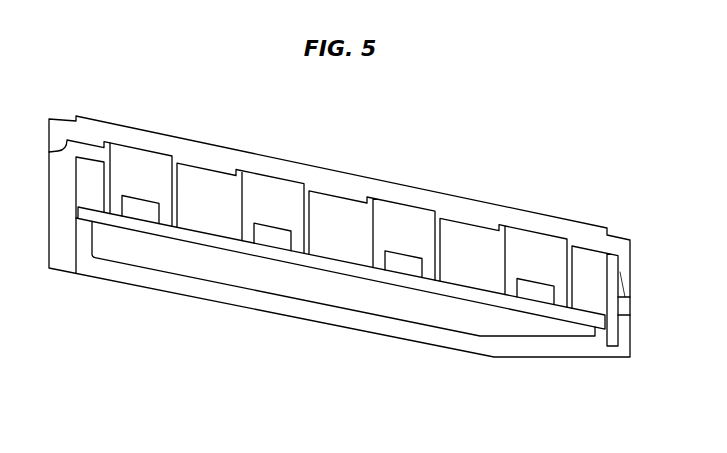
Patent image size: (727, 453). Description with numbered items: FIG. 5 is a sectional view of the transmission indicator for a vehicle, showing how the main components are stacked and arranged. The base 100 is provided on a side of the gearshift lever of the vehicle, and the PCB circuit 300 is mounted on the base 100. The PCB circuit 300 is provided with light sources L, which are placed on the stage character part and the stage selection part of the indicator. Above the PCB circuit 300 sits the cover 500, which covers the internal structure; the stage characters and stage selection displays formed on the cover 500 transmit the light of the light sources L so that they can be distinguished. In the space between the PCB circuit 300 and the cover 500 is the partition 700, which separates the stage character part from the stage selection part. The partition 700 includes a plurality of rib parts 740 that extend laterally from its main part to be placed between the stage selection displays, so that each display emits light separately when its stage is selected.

The partition 700 is at (138, 306).
The cover 500 is at (330, 184).
The rib parts 740 is at (450, 254).
The light sources L is at (533, 280).
The base 100 is at (358, 326).
The PCB circuit 300 is at (518, 308).